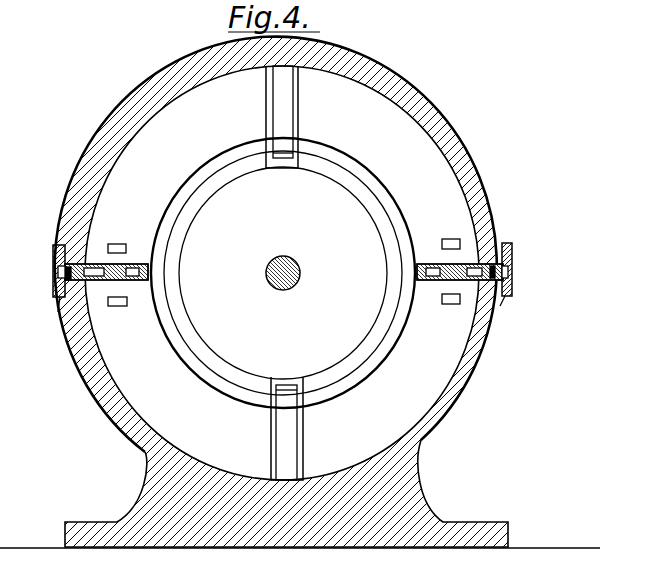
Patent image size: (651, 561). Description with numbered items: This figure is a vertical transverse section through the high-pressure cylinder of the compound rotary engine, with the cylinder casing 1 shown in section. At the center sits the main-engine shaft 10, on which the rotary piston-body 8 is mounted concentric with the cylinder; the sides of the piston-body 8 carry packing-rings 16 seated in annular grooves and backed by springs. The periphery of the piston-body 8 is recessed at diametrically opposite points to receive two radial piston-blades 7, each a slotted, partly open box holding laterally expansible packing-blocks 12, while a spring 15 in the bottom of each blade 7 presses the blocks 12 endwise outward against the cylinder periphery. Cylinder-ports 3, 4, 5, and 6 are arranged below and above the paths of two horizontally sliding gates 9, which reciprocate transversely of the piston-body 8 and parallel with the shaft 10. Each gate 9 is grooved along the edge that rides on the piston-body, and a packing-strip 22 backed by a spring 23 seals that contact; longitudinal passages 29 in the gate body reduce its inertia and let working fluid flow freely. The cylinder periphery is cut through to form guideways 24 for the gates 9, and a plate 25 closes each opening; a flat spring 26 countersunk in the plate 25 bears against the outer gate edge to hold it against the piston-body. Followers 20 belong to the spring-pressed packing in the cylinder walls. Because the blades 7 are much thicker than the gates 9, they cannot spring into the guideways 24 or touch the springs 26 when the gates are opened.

The casing / frame 1 is at (104, 404).
The cylinder-port 3 is at (117, 306).
The cylinder-port 4 is at (451, 304).
The cylinder-port 5 is at (451, 240).
The cylinder-port 6 is at (117, 244).
The radial piston-blade 7 is at (267, 104).
The rotary piston-body 8 is at (205, 388).
The sliding gate 9 is at (280, 283).
The main-engine shaft 10 is at (297, 283).
The packing-block 12 is at (285, 273).
The spring 15 is at (284, 158).
The packing-ring 16 is at (378, 350).
The follower 20 is at (118, 266).
The packing-strip 22 is at (150, 273).
The spring 23 is at (135, 265).
The guideway 24 is at (58, 312).
The plate 25 is at (53, 262).
The flat spring 26 is at (56, 283).
The longitudinal passage 29 is at (457, 266).